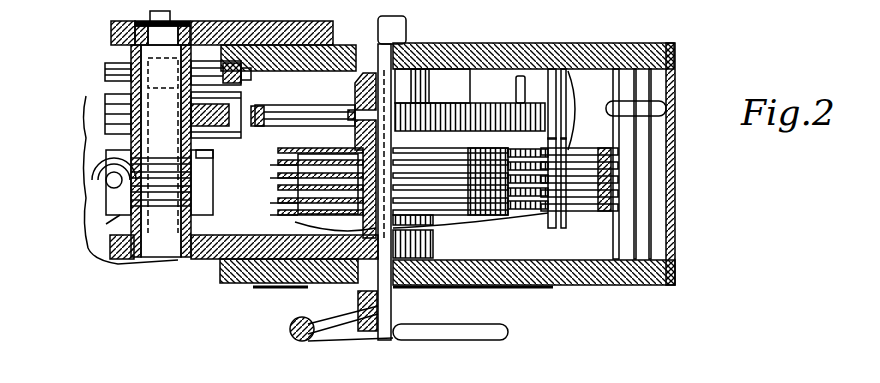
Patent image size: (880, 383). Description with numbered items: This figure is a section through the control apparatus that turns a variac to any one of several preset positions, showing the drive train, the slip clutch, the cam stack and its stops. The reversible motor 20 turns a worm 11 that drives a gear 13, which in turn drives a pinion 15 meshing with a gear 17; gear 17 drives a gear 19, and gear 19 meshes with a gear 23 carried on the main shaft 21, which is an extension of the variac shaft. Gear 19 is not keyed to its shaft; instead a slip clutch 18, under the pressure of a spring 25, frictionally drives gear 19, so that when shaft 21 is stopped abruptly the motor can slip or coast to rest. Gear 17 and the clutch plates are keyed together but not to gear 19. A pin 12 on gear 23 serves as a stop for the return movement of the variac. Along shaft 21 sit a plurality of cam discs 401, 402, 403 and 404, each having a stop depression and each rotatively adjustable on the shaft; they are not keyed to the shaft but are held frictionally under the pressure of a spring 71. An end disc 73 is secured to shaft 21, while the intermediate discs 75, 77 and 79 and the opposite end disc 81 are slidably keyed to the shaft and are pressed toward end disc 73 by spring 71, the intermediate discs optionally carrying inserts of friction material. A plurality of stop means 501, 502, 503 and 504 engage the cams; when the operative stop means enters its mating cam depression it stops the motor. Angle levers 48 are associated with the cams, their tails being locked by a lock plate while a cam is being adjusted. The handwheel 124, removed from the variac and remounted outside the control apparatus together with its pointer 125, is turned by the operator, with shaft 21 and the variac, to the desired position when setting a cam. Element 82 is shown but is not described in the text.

The worm 11 is at (93, 172).
The pin 12 is at (492, 124).
The gear 13 is at (190, 246).
The pinion 15 is at (118, 55).
The gear 17 is at (197, 60).
The slip clutch plate 18 is at (105, 92).
The gear 19 is at (232, 94).
The motor 20 is at (92, 258).
The main shaft 21 is at (397, 26).
The gear 23 is at (254, 98).
The spring 25 is at (152, 192).
The angle lever 48 is at (214, 147).
The spring 71 is at (452, 225).
The end disc 73 is at (283, 140).
The intermediate disc 75 is at (271, 164).
The intermediate disc 77 is at (271, 178).
The intermediate disc 79 is at (271, 202).
The opposite end disc 81 is at (276, 224).
The pin 82 is at (508, 76).
The handwheel 124 is at (500, 330).
The pointer 125 is at (250, 282).
The cam disc 401 is at (187, 209).
The cam disc 402 is at (187, 192).
The cam disc 403 is at (187, 176).
The cam disc 404 is at (187, 160).
The stop means 501 is at (535, 225).
The stop means 502 is at (572, 200).
The stop means 503 is at (530, 140).
The stop means 504 is at (565, 143).